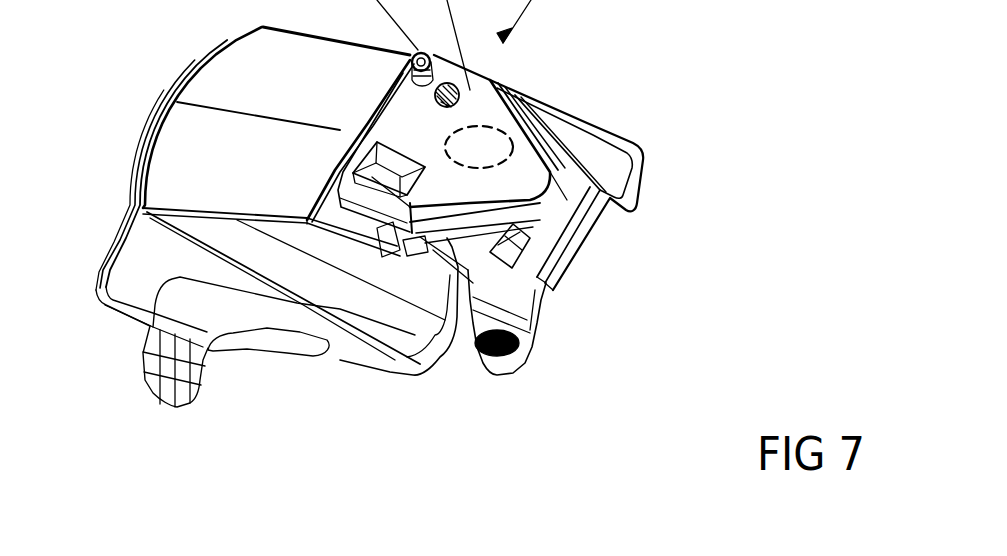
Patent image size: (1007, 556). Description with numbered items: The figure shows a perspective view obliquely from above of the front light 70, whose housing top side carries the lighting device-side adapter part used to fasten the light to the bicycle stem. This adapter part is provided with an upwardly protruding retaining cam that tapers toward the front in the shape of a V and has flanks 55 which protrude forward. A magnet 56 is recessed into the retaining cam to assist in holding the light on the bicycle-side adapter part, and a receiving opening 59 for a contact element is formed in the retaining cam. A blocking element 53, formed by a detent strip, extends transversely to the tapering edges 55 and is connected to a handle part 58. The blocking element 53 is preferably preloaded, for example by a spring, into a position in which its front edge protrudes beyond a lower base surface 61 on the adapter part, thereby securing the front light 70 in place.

The front light 70 is at (128, 85).
The flanks 55 is at (513, 110).
The magnet 56 is at (480, 147).
The receiving opening 59 is at (385, 168).
The lower base surface 61 is at (587, 197).
The blocking element 53 is at (523, 248).
The handle part 58 is at (508, 347).